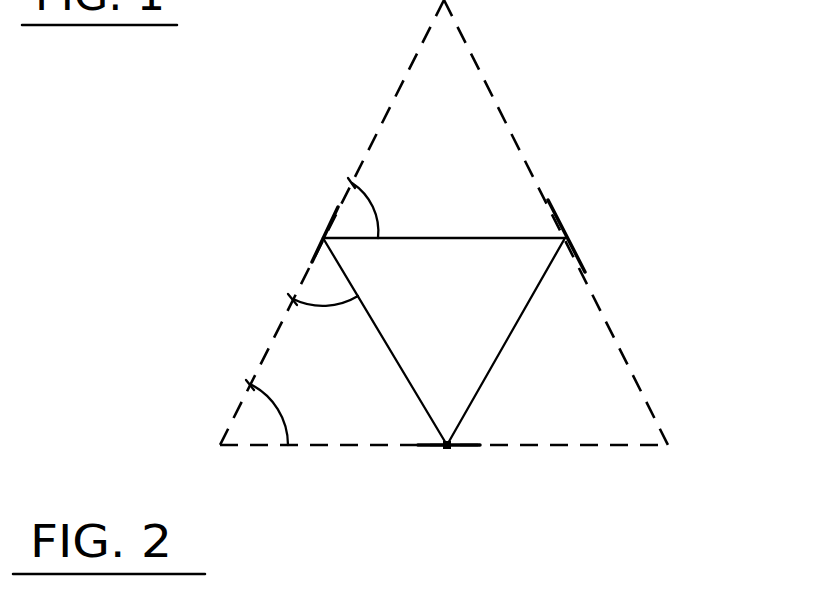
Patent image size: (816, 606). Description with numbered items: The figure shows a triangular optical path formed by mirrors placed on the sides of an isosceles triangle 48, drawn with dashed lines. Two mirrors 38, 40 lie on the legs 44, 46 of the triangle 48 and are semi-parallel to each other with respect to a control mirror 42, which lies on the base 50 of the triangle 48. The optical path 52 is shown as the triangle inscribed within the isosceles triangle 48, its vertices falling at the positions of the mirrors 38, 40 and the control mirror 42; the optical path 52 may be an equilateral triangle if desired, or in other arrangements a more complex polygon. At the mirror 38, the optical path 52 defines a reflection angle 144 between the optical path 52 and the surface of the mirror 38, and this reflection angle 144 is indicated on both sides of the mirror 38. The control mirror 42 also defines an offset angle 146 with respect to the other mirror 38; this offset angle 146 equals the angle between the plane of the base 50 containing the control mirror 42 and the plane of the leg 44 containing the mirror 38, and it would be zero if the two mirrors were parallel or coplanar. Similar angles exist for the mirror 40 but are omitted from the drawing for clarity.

The mirror 38 is at (318, 238).
The mirror 40 is at (567, 238).
The control mirror 42 is at (459, 447).
The leg of isosceles triangle 44 is at (283, 321).
The leg of isosceles triangle 46 is at (609, 325).
The isosceles triangle 48 is at (449, 247).
The base of triangle 50 is at (647, 447).
The optical path 52 is at (530, 305).
The reflection angle 144 is at (378, 200).
The offset angle 146 is at (283, 408).